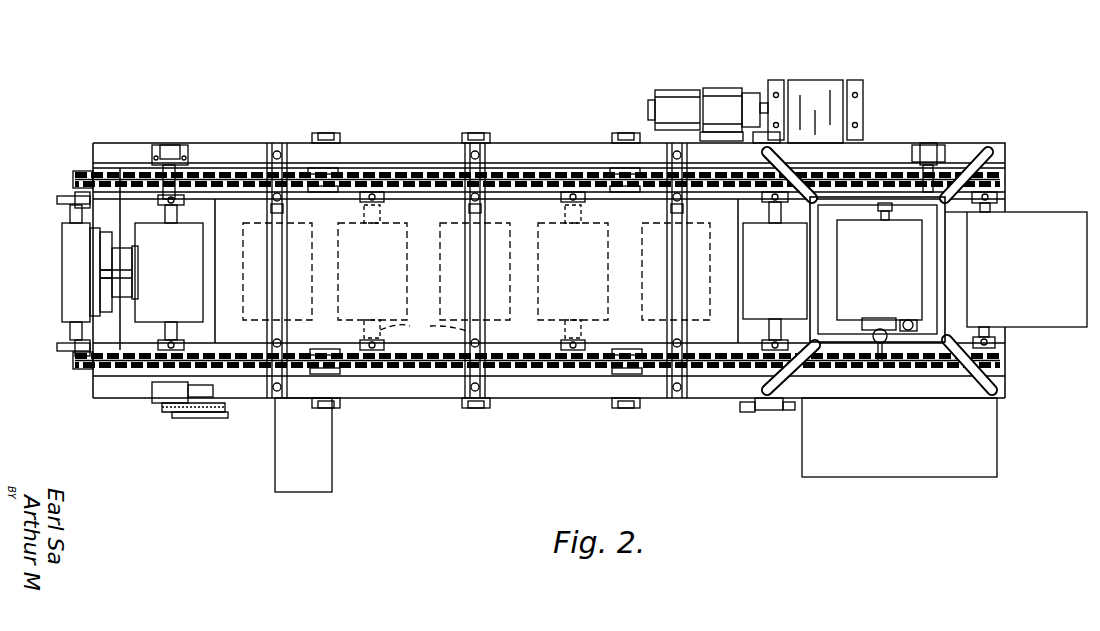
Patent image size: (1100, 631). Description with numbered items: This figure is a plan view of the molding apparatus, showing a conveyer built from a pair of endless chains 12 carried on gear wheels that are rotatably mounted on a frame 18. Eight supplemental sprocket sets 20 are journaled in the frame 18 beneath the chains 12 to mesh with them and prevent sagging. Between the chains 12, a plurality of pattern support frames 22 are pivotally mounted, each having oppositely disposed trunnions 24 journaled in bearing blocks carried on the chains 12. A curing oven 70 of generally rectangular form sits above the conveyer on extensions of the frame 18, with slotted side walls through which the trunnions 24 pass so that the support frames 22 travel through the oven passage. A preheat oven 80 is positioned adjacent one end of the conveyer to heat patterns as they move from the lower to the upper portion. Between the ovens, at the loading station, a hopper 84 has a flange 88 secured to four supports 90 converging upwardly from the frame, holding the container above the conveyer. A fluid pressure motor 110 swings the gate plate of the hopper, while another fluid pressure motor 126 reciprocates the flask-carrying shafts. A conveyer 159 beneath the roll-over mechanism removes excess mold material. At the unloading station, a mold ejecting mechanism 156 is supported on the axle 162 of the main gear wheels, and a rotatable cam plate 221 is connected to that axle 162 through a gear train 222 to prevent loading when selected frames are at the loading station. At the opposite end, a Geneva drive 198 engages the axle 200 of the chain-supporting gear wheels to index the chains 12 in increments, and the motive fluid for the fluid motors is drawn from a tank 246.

The endless chains 12 is at (413, 172).
The frame 18 is at (245, 152).
The supplemental gear wheel or sprocket sets 20 is at (330, 168).
The pattern support frame 22 is at (63, 232).
The trunnions 24 is at (425, 331).
The curing oven 70 is at (510, 200).
The preheat oven 80 is at (1066, 226).
The hopper 84 is at (884, 266).
The flange 88 is at (818, 282).
The supports 90 is at (972, 160).
The fluid pressure motor 110 is at (910, 320).
The fluid pressure motor 126 is at (876, 330).
The mold ejecting mechanism 156 is at (98, 275).
The conveyer 159 is at (812, 95).
The axle 162 is at (190, 138).
The Geneva drive 198 is at (822, 448).
The axle 200 is at (930, 145).
The rotatable cam plate 221 is at (212, 420).
The gear train 222 is at (226, 408).
The tank 246 is at (276, 465).